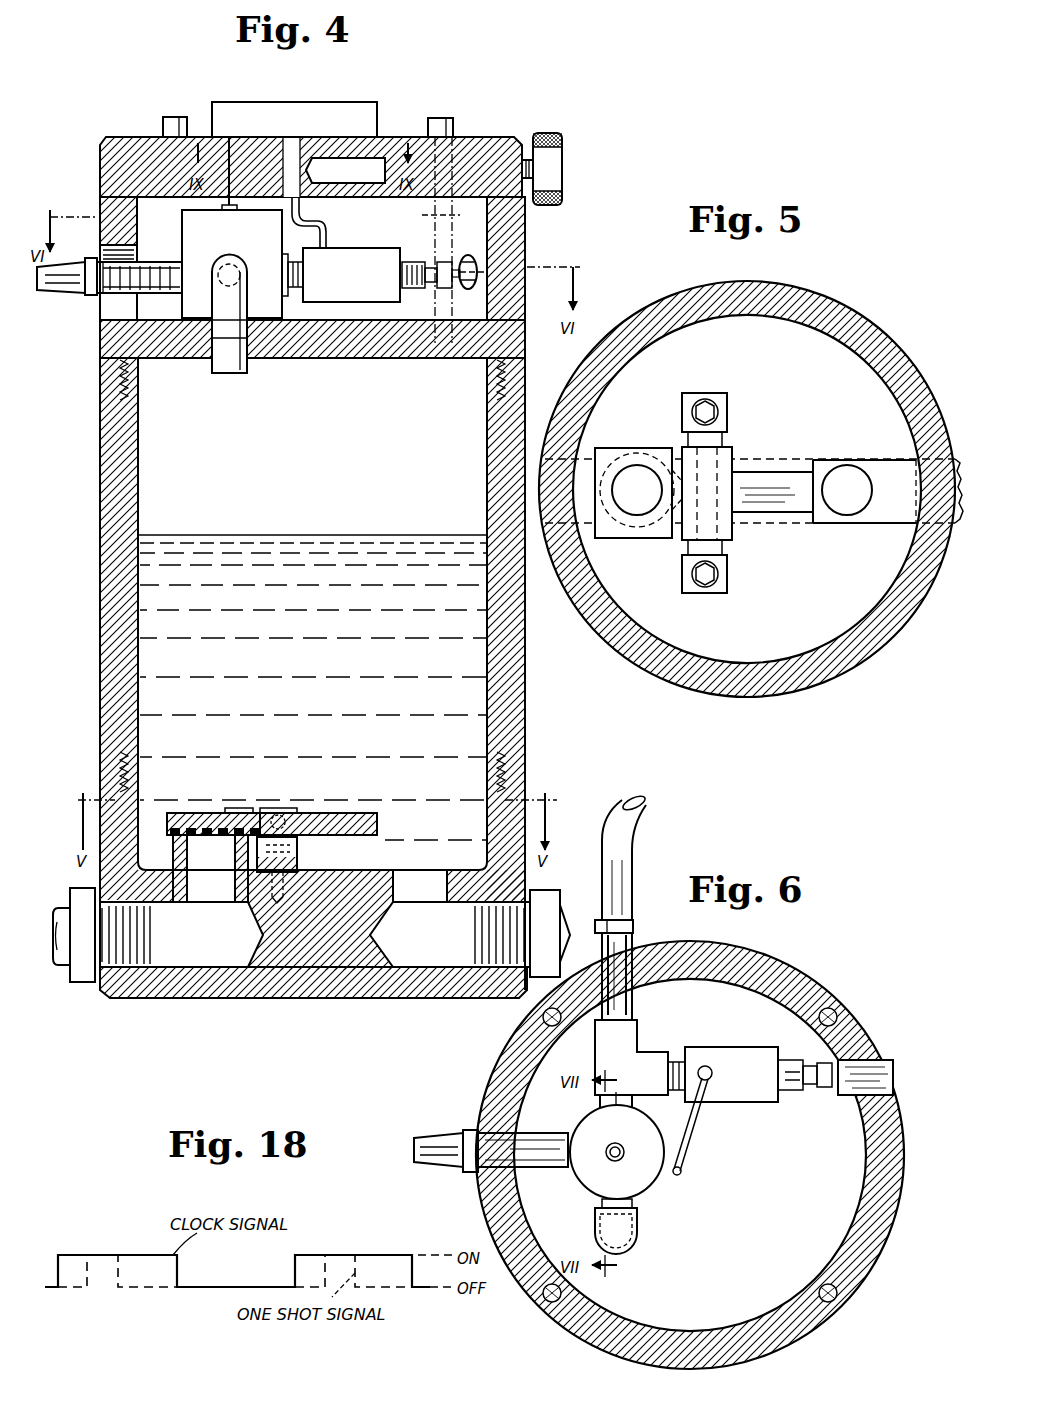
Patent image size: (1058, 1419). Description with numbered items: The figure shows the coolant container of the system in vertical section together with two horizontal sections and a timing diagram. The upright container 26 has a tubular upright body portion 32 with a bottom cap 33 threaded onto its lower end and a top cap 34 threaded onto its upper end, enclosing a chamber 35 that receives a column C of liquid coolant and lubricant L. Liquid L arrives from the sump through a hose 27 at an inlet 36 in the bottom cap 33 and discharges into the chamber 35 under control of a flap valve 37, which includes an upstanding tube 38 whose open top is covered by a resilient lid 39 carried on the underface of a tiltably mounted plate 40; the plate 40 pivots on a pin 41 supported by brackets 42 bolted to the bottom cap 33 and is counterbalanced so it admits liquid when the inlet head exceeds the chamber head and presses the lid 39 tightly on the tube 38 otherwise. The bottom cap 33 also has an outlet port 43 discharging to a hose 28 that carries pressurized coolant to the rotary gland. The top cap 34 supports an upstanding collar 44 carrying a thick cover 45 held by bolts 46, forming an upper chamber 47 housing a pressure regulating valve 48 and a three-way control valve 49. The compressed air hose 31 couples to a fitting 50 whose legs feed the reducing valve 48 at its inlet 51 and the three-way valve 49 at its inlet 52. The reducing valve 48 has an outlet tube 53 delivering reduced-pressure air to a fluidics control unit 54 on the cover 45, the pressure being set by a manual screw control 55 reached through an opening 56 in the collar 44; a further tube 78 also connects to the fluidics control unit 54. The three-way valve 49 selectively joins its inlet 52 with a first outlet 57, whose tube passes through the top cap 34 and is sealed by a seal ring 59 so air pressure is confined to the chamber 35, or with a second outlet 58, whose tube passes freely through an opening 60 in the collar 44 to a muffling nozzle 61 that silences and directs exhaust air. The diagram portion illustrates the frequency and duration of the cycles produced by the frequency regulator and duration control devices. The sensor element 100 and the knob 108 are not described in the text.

In FIG. 4, the upright container 26 is at (98, 506).
In FIG. 5, the upright container 26 is at (848, 312).
In FIG. 4, the hose 27 is at (64, 982).
In FIG. 4, the hose 28 is at (560, 905).
In FIG. 5, the hose 28 is at (956, 530).
In FIG. 6, the hose 31 is at (630, 852).
In FIG. 4, the tubular upright body portion 32 is at (100, 672).
In FIG. 4, the bottom cap 33 is at (302, 998).
In FIG. 4, the top cap 34 is at (376, 358).
In FIG. 4, the chamber 35 is at (307, 469).
In FIG. 5, the chamber 35 is at (822, 612).
In FIG. 4, the inlet 36 is at (220, 944).
In FIG. 4, the flap valve 37 is at (229, 812).
In FIG. 5, the flap valve 37 is at (733, 460).
In FIG. 4, the upstanding tube 38 is at (186, 858).
In FIG. 4, the resilient lid 39 is at (196, 828).
In FIG. 4, the tiltably mounted plate 40 is at (350, 813).
In FIG. 5, the tiltably mounted plate 40 is at (619, 448).
In FIG. 4, the pin 41 is at (283, 818).
In FIG. 5, the pin 41 is at (665, 535).
In FIG. 4, the brackets 42 is at (298, 863).
In FIG. 5, the brackets 42 is at (728, 413).
In FIG. 4, the outlet port 43 is at (438, 944).
In FIG. 5, the outlet port 43 is at (846, 465).
In FIG. 4, the upstanding collar 44 is at (522, 218).
In FIG. 4, the cover 45 is at (132, 137).
In FIG. 4, the bolts 46 is at (175, 117).
In FIG. 4, the chamber 47 is at (150, 235).
In FIG. 6, the chamber 47 is at (777, 1246).
In FIG. 4, the pressure regulating valve 48 is at (367, 282).
In FIG. 4, the three-way control valve 49 is at (263, 247).
In FIG. 6, the fitting 50 is at (640, 1033).
In FIG. 4, the inlet of the pressure reducing valve 51 is at (288, 297).
In FIG. 6, the inlet of the three-way valve 52 is at (600, 1104).
In FIG. 4, the outlet tube 53 is at (327, 226).
In FIG. 4, the fluidics control unit 54 is at (377, 103).
In FIG. 4, the manual screw control 55 is at (441, 290).
In FIG. 4, the opening 56 is at (470, 262).
In FIG. 6, the opening 56 is at (882, 1080).
In FIG. 4, the first outlet 57 is at (240, 374).
In FIG. 4, the second outlet 58 is at (113, 294).
In FIG. 4, the seal ring 59 is at (214, 340).
In FIG. 4, the opening 60 is at (123, 306).
In FIG. 4, the muffling nozzle 61 is at (62, 284).
In FIG. 4, the tube 78 is at (224, 208).
In FIG. 4, the sensor 100 is at (345, 170).
In FIG. 4, the knob 108 is at (564, 146).
In FIG. 4, the column C is at (404, 535).
In FIG. 4, the liquid coolant and lubricant L is at (470, 697).